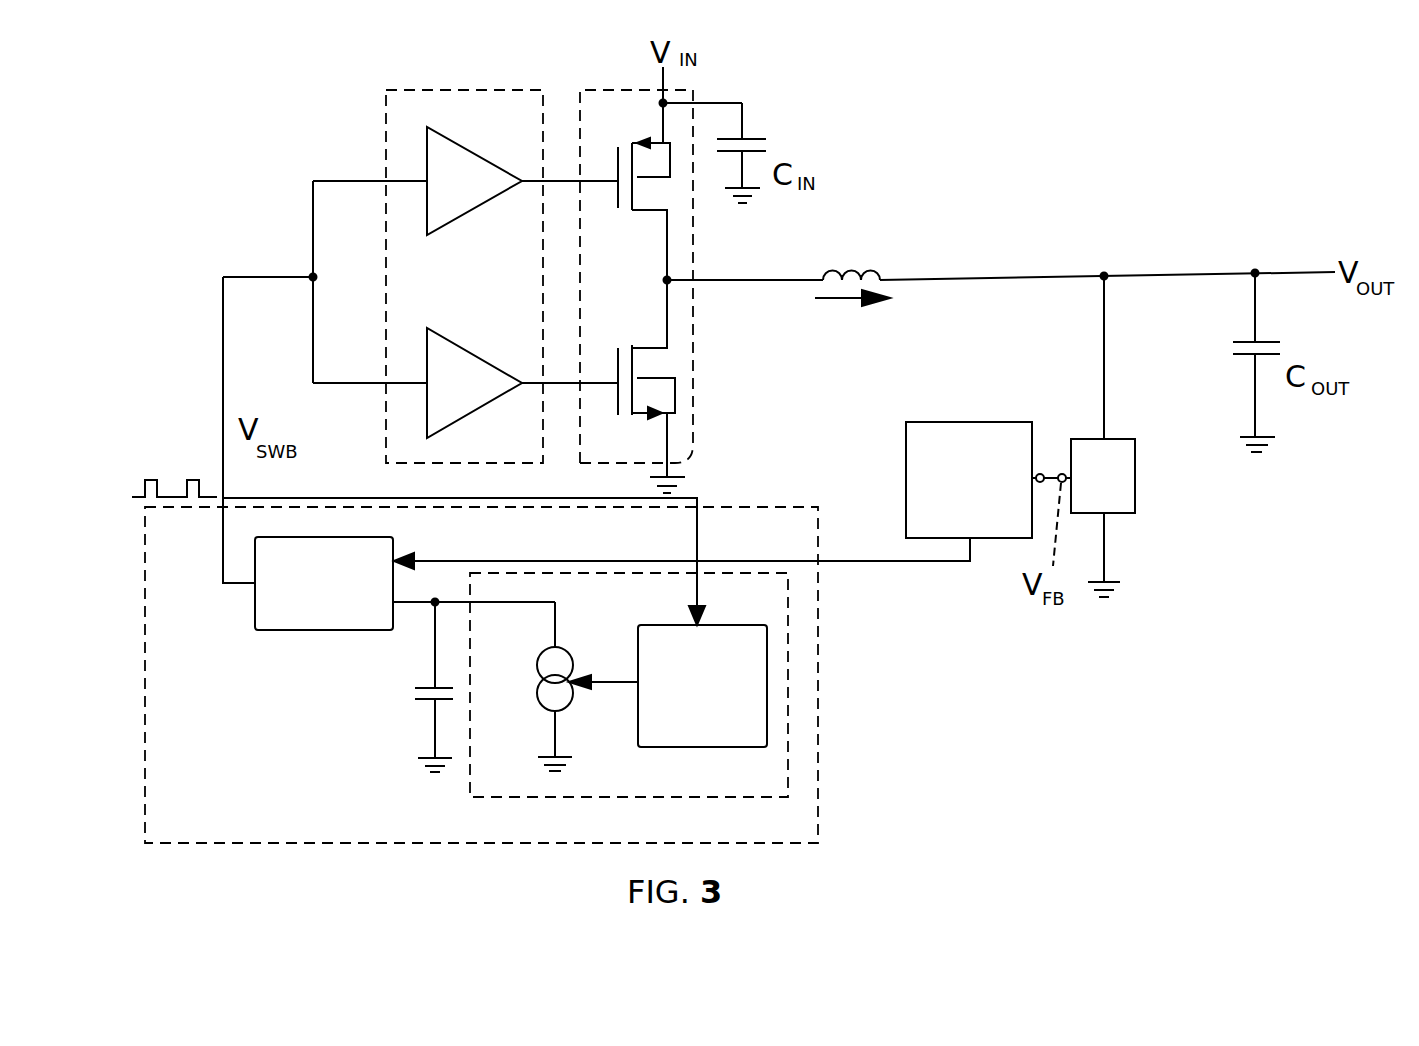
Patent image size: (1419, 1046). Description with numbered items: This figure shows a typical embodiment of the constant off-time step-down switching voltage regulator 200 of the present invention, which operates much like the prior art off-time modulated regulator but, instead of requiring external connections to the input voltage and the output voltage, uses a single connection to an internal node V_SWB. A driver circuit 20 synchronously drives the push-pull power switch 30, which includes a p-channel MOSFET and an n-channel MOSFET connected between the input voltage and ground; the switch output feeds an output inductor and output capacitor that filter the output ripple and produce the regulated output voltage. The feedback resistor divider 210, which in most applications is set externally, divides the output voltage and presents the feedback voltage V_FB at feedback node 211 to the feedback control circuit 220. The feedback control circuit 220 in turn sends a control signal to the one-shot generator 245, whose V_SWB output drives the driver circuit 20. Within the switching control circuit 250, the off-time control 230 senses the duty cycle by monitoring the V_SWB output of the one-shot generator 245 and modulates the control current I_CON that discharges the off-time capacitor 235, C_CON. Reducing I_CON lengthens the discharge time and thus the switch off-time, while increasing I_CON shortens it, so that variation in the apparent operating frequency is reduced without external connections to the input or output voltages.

The driver circuit 20 is at (427, 90).
The push-pull power switch 30 is at (625, 88).
The switching voltage regulator 200 is at (930, 185).
The feedback resistor divider 210 is at (1115, 438).
The feedback node 211 is at (1045, 472).
The feedback control circuit 220 is at (905, 430).
The off-time control 230 is at (468, 783).
The off-time capacitor 235 is at (425, 700).
The one-shot generator 245 is at (290, 632).
The switching control circuit 250 is at (455, 845).